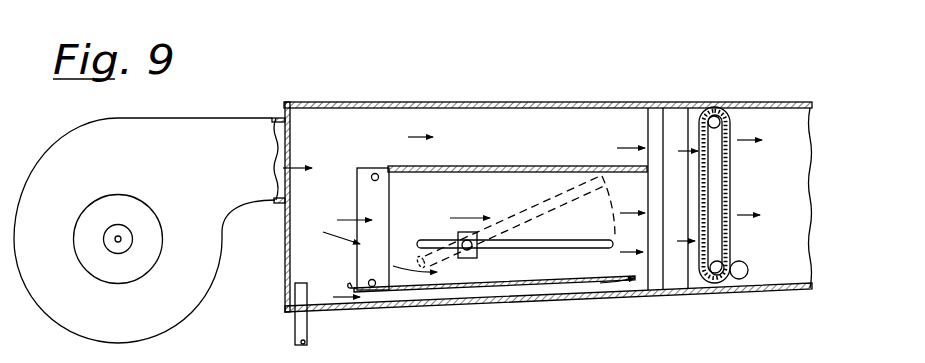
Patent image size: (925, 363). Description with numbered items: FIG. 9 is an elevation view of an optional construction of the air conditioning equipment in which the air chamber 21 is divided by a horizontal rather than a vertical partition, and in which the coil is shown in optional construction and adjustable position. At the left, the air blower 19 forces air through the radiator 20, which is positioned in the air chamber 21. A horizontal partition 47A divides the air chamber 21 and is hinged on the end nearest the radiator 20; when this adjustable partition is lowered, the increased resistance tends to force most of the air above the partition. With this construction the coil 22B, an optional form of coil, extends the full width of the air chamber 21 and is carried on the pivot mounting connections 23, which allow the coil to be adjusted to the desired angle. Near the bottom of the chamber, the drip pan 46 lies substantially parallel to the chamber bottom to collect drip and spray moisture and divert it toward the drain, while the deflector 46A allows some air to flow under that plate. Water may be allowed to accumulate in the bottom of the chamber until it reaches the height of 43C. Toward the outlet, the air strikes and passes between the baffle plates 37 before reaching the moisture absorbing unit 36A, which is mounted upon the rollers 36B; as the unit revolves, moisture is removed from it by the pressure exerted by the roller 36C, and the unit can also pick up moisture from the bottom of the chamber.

The air blower 19 is at (146, 230).
The radiator 20 is at (357, 199).
The air chamber 21 is at (542, 207).
The coil 22B is at (515, 216).
The pivot mounting connections 23 is at (478, 256).
The moisture absorbing unit 36A is at (729, 190).
The rollers 36B is at (722, 113).
The roller 36C is at (747, 263).
The baffle plates 37 is at (668, 199).
The water level height 43C is at (307, 288).
The drip pan 46 is at (447, 290).
The deflector 46A is at (352, 293).
The horizontal partition 47A is at (565, 155).